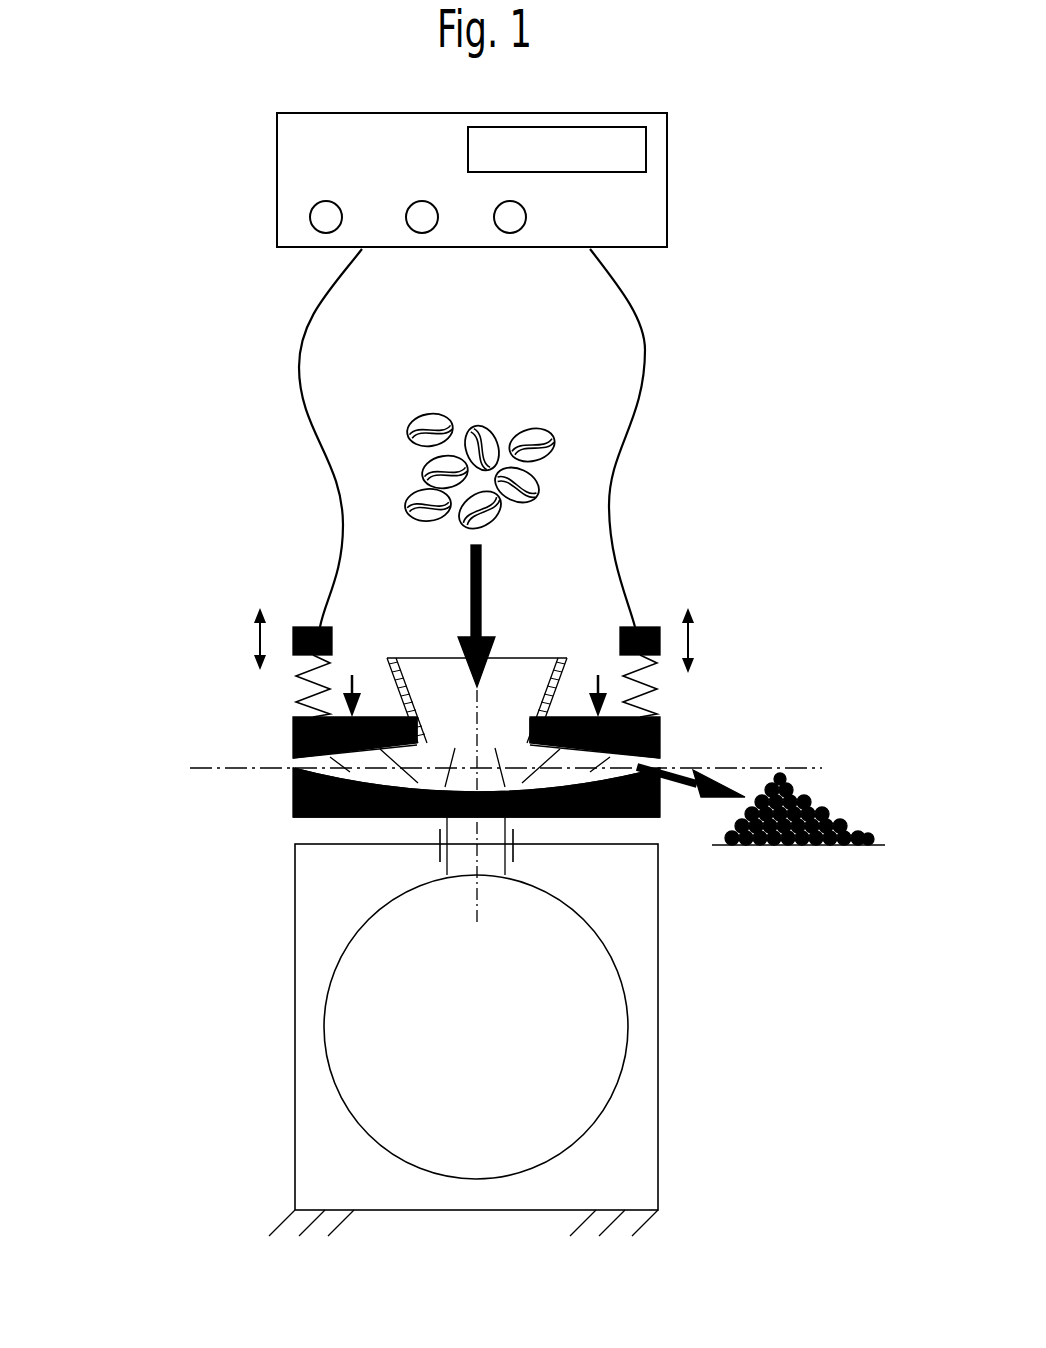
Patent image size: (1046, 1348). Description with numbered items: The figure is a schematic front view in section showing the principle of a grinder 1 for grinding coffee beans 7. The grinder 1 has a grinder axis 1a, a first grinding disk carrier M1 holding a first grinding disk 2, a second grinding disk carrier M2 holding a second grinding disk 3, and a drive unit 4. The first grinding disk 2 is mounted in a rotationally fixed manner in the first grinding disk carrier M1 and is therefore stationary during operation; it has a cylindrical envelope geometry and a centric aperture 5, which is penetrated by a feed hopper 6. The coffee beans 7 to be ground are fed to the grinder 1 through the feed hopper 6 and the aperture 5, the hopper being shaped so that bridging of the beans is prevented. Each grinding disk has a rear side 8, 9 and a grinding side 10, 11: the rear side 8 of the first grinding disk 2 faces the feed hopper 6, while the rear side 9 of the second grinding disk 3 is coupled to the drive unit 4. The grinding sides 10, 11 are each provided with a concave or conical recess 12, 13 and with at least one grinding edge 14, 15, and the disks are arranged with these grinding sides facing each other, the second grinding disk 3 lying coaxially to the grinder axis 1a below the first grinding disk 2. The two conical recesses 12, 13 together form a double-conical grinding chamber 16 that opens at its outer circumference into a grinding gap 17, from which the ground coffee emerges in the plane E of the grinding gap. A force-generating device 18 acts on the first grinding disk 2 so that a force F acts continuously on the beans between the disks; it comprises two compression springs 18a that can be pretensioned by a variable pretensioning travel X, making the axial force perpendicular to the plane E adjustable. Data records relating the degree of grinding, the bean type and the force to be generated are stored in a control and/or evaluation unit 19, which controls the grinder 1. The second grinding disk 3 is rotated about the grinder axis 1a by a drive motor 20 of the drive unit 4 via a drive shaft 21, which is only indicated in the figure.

The grinder 1 is at (262, 361).
The grinder axis 1a is at (474, 920).
The first grinding disk 2 is at (660, 735).
The second grinding disk 3 is at (650, 817).
The drive unit 4 is at (214, 1046).
The centric aperture 5 is at (430, 730).
The feed hopper 6 is at (527, 680).
The coffee beans 7 is at (528, 432).
The rear side of first grinding disk 8 is at (400, 717).
The rear side of second grinding disk 9 is at (383, 817).
The grinding side of first grinding disk 10 is at (350, 815).
The grinding side of second grinding disk 11 is at (359, 860).
The recess of first grinding disk 12 is at (350, 815).
The recess of second grinding disk 13 is at (359, 860).
The grinding edge of first grinding disk 14 is at (295, 792).
The grinding edge of second grinding disk 15 is at (352, 817).
The double-conical grinding chamber 16 is at (495, 768).
The grinding gap 17 is at (295, 770).
The force-generating device 18 is at (246, 690).
The compression springs 18a is at (295, 703).
The control and/or evaluation unit 19 is at (667, 218).
The drive motor 20 is at (572, 1102).
The drive shaft 21 is at (479, 844).
The pretensioning travel X is at (475, 640).
The force F is at (475, 696).
The first grinding disk carrier M1 is at (247, 733).
The second grinding disk carrier M2 is at (242, 797).
The plane of the grinding gap E is at (808, 768).